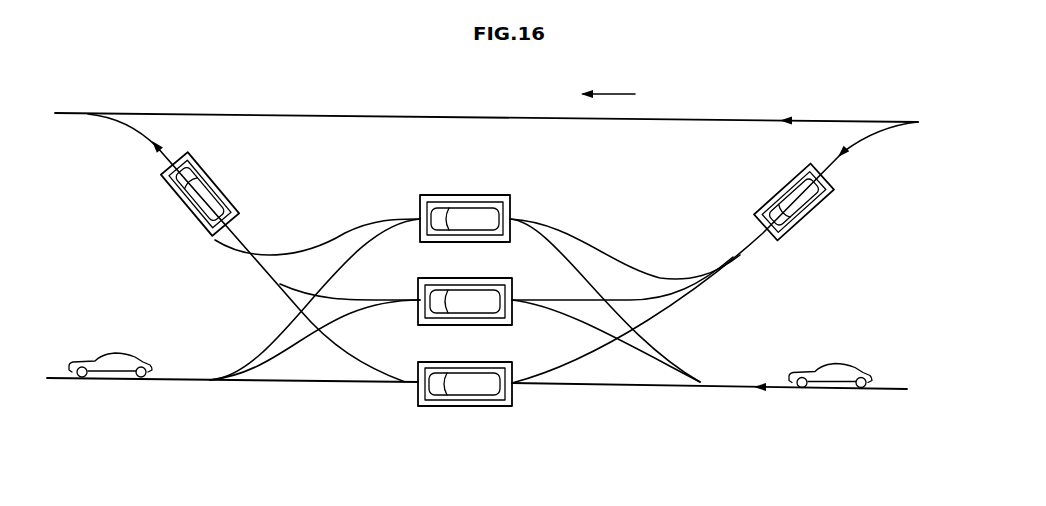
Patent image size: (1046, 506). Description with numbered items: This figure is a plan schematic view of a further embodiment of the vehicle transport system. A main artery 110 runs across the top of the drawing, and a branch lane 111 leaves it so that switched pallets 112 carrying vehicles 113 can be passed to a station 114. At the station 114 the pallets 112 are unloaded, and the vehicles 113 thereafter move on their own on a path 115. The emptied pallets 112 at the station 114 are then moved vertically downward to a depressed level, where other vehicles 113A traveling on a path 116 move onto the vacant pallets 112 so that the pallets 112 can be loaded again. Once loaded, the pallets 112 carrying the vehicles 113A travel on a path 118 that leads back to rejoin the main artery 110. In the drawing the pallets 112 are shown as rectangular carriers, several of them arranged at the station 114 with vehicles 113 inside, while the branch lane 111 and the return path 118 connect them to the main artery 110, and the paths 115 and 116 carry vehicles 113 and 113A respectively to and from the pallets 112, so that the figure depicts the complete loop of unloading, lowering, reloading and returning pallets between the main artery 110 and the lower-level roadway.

The main artery 110 is at (330, 115).
The branch lane 111 is at (832, 165).
The pallets 112 is at (497, 293).
The vehicles 113 is at (113, 357).
The vehicles 113A is at (200, 190).
The station 114 is at (456, 190).
The path 115 is at (189, 377).
The path 116 is at (905, 390).
The path 118 is at (240, 238).